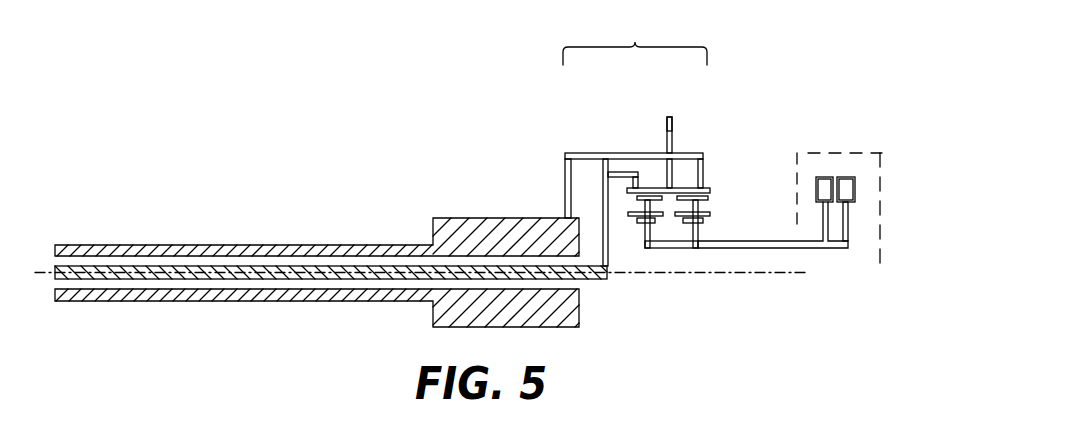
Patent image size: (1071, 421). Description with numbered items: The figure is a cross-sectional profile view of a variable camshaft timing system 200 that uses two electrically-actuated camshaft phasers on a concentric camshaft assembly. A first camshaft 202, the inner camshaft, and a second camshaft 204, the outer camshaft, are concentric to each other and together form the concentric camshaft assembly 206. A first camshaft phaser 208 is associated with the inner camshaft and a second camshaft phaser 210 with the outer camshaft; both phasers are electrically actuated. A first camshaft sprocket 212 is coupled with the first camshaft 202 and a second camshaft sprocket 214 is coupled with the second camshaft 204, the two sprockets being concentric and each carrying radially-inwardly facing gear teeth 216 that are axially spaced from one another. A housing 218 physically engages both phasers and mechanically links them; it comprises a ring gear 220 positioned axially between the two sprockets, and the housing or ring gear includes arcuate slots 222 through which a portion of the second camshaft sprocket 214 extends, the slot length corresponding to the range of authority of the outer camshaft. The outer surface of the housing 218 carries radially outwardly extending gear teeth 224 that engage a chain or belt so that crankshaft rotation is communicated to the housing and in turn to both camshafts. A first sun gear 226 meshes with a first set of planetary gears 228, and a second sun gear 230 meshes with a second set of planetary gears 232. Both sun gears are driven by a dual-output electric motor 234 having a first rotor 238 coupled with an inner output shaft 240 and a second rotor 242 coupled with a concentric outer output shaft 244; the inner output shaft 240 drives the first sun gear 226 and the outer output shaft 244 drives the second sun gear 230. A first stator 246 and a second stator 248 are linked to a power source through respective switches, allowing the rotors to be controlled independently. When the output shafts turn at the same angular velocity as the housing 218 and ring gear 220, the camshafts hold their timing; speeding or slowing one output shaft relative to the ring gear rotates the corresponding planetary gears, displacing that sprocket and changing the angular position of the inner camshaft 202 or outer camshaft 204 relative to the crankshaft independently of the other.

The variable camshaft timing system 200 is at (860, 104).
The first camshaft 202 is at (55, 267).
The second camshaft 204 is at (142, 244).
The concentric camshaft assembly 206 is at (104, 314).
The first camshaft phaser 208 is at (643, 153).
The second camshaft phaser 210 is at (701, 155).
The first camshaft sprocket 212 is at (598, 162).
The second camshaft sprocket 214 is at (706, 186).
The radially-inwardly facing gear teeth 216 is at (630, 193).
The housing 218 is at (635, 38).
The ring gear 220 is at (652, 249).
The slots 222 is at (665, 152).
The radially outwardly extending gear teeth 224 is at (672, 118).
The first sun gear 226 is at (646, 226).
The first set of planetary gears 228 is at (630, 213).
The second sun gear 230 is at (713, 248).
The second set of planetary gears 232 is at (704, 217).
The dual-output electric motor 234 is at (887, 196).
The first rotor 238 is at (828, 203).
The inner output shaft 240 is at (814, 249).
The second rotor 242 is at (840, 204).
The outer output shaft 244 is at (770, 240).
The first stator 246 is at (861, 152).
The second stator 248 is at (829, 150).